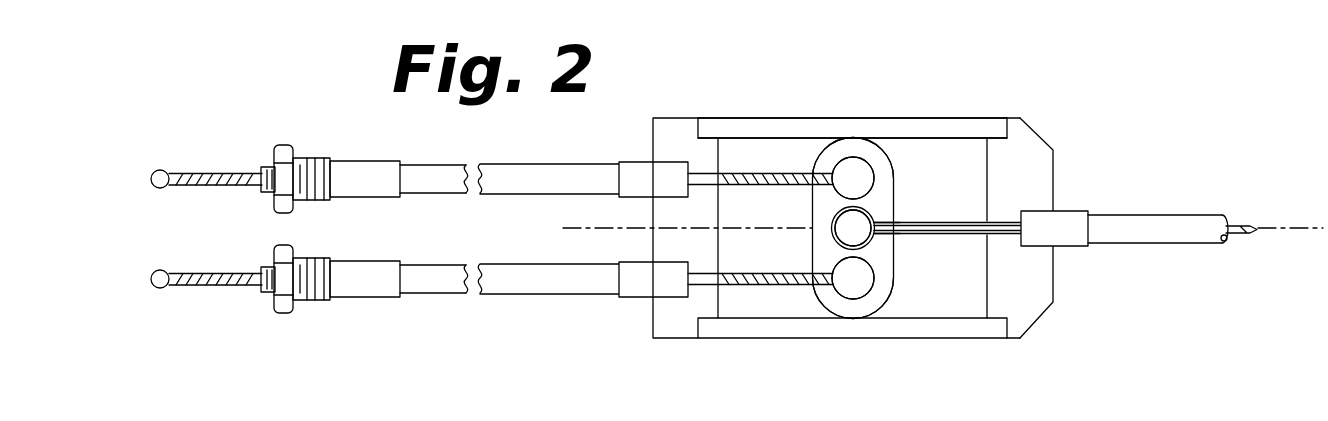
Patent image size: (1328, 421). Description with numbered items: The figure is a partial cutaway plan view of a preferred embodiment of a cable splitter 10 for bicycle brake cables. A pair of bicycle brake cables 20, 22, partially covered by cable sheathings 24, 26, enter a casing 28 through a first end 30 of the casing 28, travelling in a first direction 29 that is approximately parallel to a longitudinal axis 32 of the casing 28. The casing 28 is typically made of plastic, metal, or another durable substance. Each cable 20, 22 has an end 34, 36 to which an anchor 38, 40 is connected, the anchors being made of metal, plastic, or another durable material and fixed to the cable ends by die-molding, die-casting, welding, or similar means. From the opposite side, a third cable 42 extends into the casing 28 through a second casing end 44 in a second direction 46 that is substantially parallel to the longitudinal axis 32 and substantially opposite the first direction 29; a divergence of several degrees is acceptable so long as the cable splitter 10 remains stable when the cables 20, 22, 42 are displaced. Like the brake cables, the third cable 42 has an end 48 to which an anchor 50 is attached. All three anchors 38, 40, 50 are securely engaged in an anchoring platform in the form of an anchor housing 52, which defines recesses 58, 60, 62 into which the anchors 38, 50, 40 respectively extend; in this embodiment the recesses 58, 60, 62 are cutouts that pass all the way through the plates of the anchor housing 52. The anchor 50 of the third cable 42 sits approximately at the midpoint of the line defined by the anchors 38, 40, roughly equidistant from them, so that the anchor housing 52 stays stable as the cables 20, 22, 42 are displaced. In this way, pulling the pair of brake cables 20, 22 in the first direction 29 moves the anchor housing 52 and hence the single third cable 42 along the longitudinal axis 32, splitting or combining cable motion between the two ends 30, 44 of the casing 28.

The cable splitter 10 is at (848, 207).
The first bicycle brake cable 20 is at (745, 172).
The second bicycle brake cable 22 is at (720, 286).
The cable sheathing 24 is at (520, 172).
The cable sheathing 26 is at (548, 292).
The casing 28 is at (872, 126).
The first direction 29 is at (789, 200).
The first end of the casing 30 is at (652, 319).
The longitudinal axis 32 is at (1288, 230).
The end of first cable 34 is at (832, 177).
The end of second cable 36 is at (826, 283).
The anchor 38 is at (857, 170).
The anchor 40 is at (857, 288).
The third cable 42 is at (928, 222).
The second casing end 44 is at (1037, 157).
The second direction 46 is at (911, 252).
The end of third cable 48 is at (884, 229).
The anchor 50 is at (853, 238).
The anchor housing 52 is at (874, 163).
The recess 58 is at (840, 160).
The recess 60 is at (832, 233).
The recess 62 is at (837, 267).